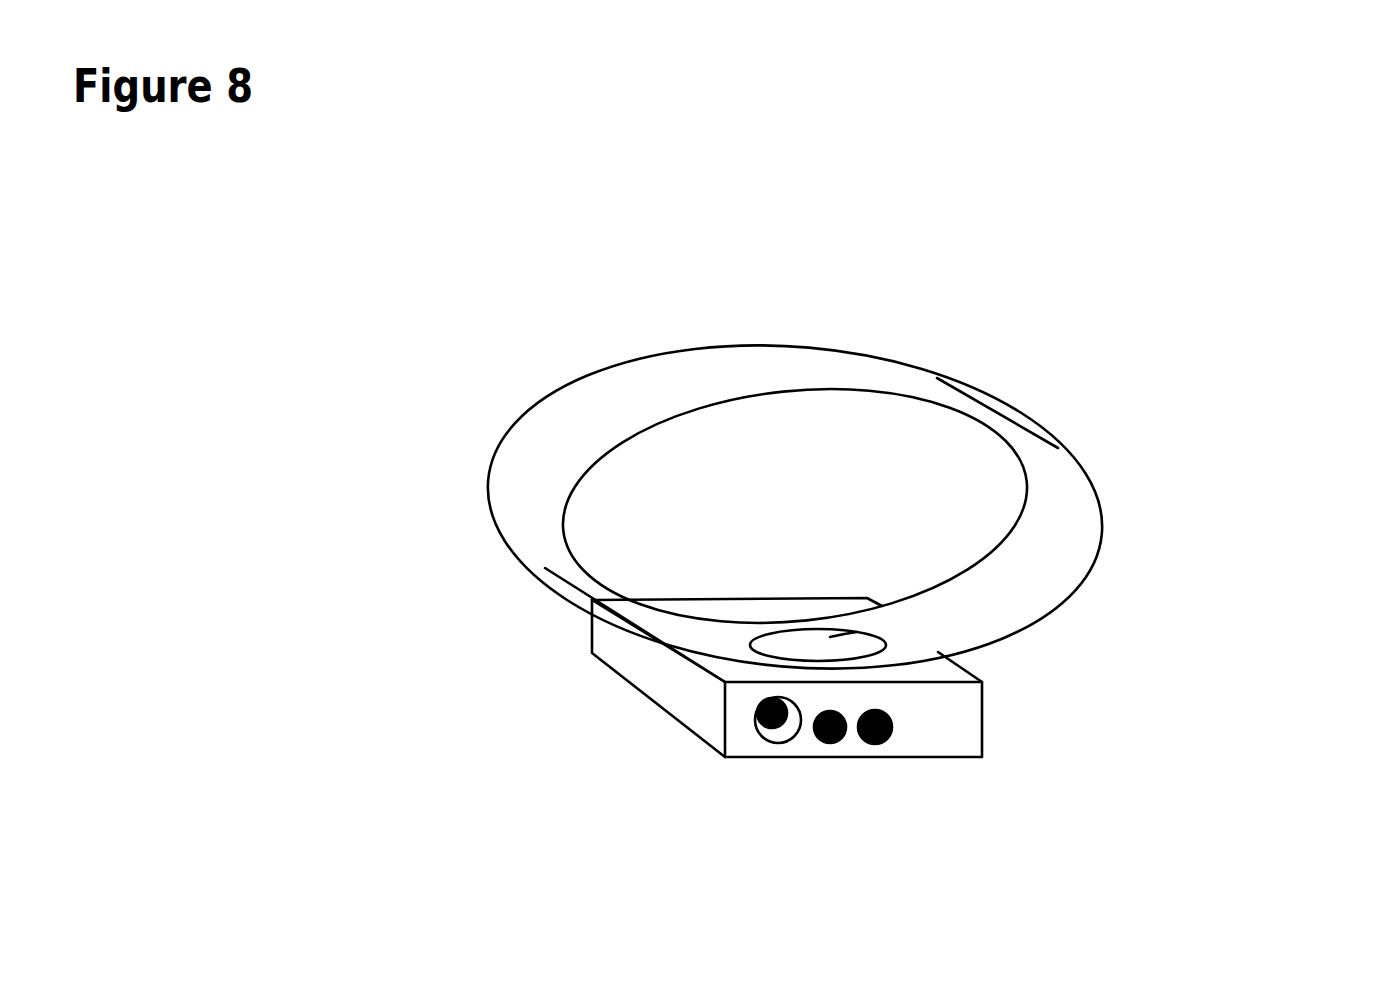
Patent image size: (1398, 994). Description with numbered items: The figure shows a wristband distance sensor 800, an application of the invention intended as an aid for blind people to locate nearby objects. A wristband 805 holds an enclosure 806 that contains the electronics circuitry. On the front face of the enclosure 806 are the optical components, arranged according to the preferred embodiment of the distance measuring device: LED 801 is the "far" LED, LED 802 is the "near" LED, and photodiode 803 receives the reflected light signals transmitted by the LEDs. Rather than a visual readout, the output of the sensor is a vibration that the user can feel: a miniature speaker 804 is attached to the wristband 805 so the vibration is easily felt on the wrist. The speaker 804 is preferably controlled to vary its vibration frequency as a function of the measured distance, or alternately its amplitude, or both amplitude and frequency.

The wristband distance sensor 800 is at (1203, 307).
The LED 801 is at (760, 725).
The LED 802 is at (832, 738).
The photodiode 803 is at (890, 727).
The miniature speaker 804 is at (858, 632).
The wristband 805 is at (740, 349).
The enclosure 806 is at (637, 682).